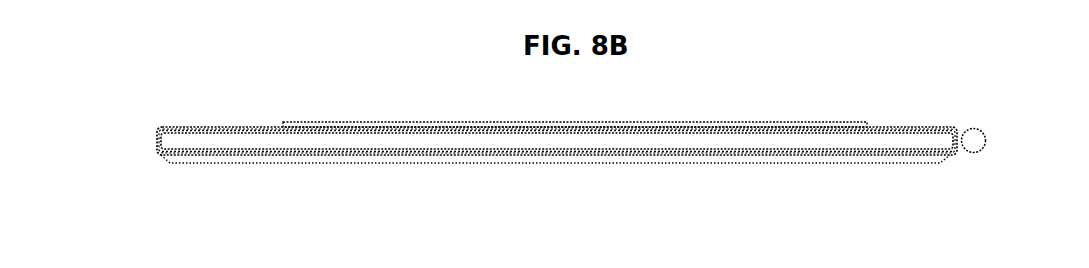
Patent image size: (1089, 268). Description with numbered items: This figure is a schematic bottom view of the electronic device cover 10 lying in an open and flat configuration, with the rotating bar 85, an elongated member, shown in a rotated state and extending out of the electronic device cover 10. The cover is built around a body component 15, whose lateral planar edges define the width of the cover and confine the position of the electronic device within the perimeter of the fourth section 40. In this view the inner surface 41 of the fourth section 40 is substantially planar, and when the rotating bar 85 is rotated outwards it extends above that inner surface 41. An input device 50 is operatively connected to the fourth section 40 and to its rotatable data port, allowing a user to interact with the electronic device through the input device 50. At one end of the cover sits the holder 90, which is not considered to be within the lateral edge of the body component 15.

The electronic device cover 10 is at (100, 133).
The body component 15 is at (381, 170).
The fourth section 40 is at (782, 161).
The inner surface 41 is at (895, 127).
The input device 50 is at (871, 136).
The rotating bar 85 is at (782, 122).
The holder 90 is at (990, 146).